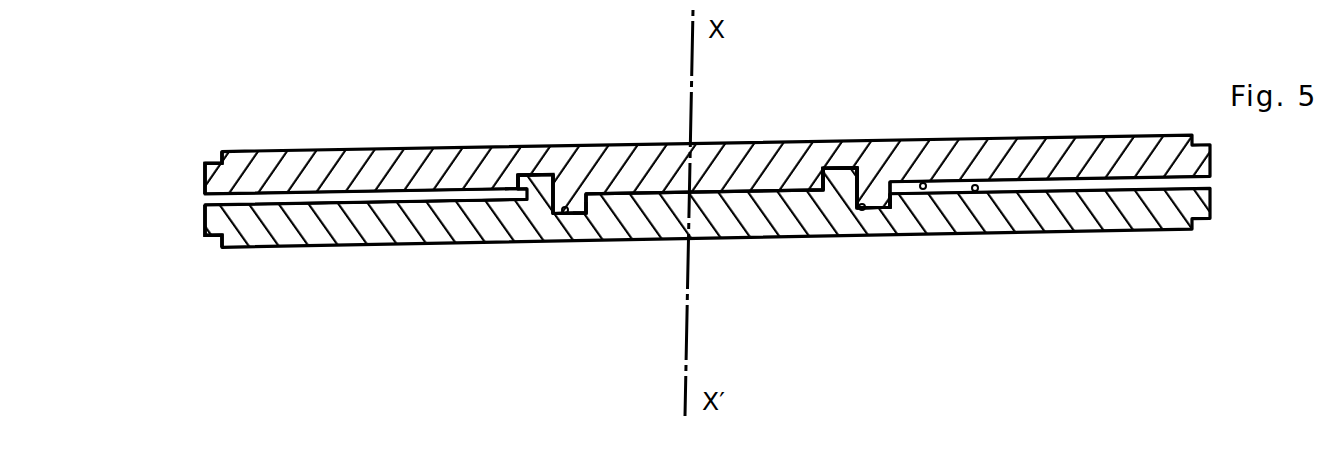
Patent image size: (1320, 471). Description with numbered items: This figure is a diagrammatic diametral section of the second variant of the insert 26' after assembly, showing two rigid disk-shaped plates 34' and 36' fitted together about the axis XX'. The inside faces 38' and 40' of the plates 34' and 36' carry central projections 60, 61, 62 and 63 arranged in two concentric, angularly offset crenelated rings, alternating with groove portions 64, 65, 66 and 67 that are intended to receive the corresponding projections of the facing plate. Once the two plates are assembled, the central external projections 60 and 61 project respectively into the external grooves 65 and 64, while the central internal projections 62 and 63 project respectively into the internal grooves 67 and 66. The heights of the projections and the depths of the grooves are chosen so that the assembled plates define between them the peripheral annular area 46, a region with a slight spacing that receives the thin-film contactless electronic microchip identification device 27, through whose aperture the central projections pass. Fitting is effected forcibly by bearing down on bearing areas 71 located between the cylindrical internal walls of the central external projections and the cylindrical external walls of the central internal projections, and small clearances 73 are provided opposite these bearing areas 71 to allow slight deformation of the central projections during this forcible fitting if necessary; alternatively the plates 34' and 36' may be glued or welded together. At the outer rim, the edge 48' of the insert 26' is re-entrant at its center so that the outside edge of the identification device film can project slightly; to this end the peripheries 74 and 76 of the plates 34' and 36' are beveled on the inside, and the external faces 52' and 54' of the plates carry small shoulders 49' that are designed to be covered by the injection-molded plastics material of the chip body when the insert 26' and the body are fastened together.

The insert 26' is at (721, 178).
The plate 34' is at (707, 153).
The plate 36' is at (707, 229).
The inside face 38' is at (875, 146).
The inside face 40' is at (981, 247).
The peripheral annular area 46 is at (298, 199).
The edge 48' is at (1096, 172).
The shoulders 49' is at (215, 210).
The external face 52' is at (707, 141).
The external face 54' is at (707, 245).
The contactless electronic microchip identification device 27 is at (437, 205).
The central external projection 60 is at (867, 212).
The central external projection 61 is at (548, 177).
The central internal projection 62 is at (545, 212).
The central internal projection 63 is at (832, 172).
The groove portion 64 is at (518, 172).
The groove portion 65 is at (838, 208).
The groove portion 66 is at (847, 170).
The groove portion 67 is at (553, 216).
The bearing areas 71 is at (557, 192).
The small clearances 73 is at (513, 188).
The periphery 74 is at (212, 186).
The periphery 76 is at (206, 213).